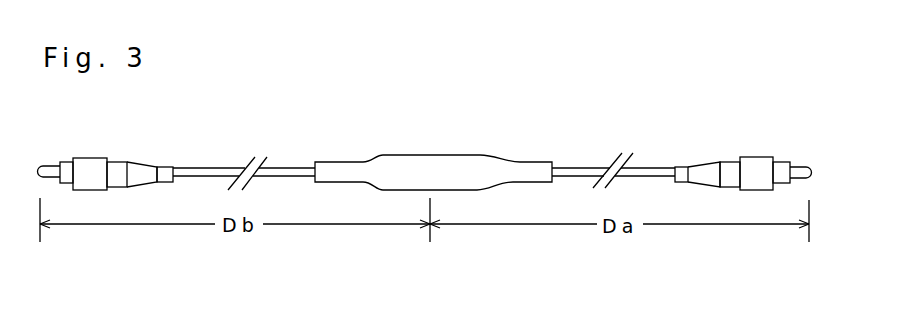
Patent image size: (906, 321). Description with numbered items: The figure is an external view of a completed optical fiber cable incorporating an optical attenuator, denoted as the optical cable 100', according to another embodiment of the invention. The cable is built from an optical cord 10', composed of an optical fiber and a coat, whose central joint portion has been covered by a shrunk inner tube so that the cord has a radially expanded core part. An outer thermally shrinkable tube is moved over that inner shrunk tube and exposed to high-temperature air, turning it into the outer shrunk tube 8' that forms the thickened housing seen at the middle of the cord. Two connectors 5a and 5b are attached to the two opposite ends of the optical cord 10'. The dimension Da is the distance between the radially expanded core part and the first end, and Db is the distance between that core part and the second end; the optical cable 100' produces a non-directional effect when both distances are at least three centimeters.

The optical fiber cable incorporating the optical attenuator 100' is at (425, 134).
The optical cord with radially expanded core part 10' is at (424, 147).
The outer shrunk tube 8' is at (433, 159).
The connector 5b is at (86, 159).
The connector 5a is at (758, 162).